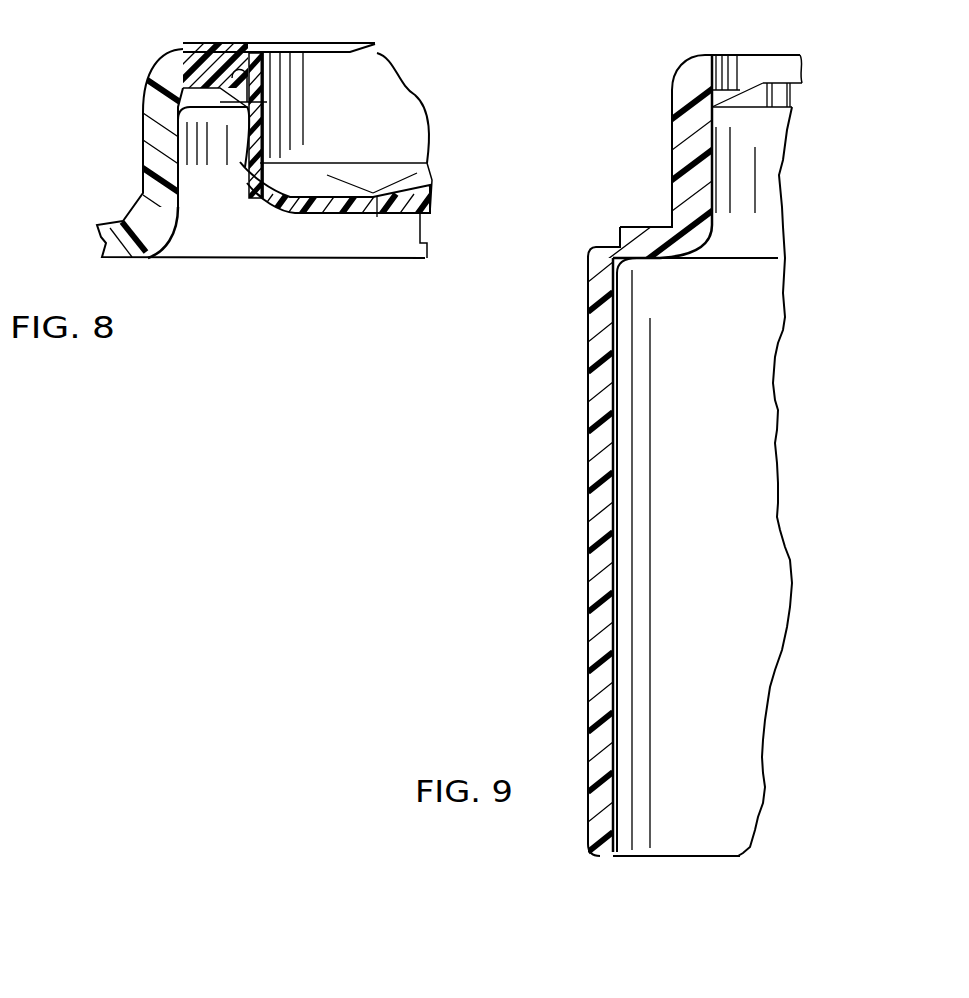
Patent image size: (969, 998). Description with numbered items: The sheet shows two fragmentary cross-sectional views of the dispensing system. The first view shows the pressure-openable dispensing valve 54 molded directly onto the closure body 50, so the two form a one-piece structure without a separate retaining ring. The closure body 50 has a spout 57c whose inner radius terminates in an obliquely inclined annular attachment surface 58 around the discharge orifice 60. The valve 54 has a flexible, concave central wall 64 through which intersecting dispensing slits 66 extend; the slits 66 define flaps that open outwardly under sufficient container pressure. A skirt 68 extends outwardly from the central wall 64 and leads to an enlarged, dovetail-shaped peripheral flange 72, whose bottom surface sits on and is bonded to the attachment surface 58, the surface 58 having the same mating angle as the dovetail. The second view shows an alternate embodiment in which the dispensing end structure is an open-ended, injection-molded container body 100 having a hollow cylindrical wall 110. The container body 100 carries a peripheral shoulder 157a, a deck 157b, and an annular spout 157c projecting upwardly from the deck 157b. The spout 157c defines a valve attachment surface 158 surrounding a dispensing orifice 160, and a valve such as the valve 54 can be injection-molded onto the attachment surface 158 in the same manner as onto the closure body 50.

In FIG. 8, the closure body 50 is at (126, 207).
In FIG. 8, the pressure-openable dispensing valve 54 is at (262, 222).
In FIG. 8, the spout 57c is at (143, 112).
In FIG. 8, the attachment surface 58 is at (230, 77).
In FIG. 8, the discharge orifice 60 is at (233, 80).
In FIG. 8, the central wall 64 is at (403, 215).
In FIG. 8, the dispensing slits 66 is at (376, 200).
In FIG. 8, the skirt 68 is at (230, 107).
In FIG. 8, the peripheral flange 72 is at (223, 44).
In FIG. 9, the container body 100 is at (584, 428).
In FIG. 9, the cylindrical wall 110 is at (595, 570).
In FIG. 9, the peripheral shoulder 157a is at (603, 245).
In FIG. 9, the deck 157b is at (637, 222).
In FIG. 9, the annular spout 157c is at (672, 108).
In FIG. 9, the valve attachment surface 158 is at (732, 90).
In FIG. 9, the dispensing orifice 160 is at (785, 80).